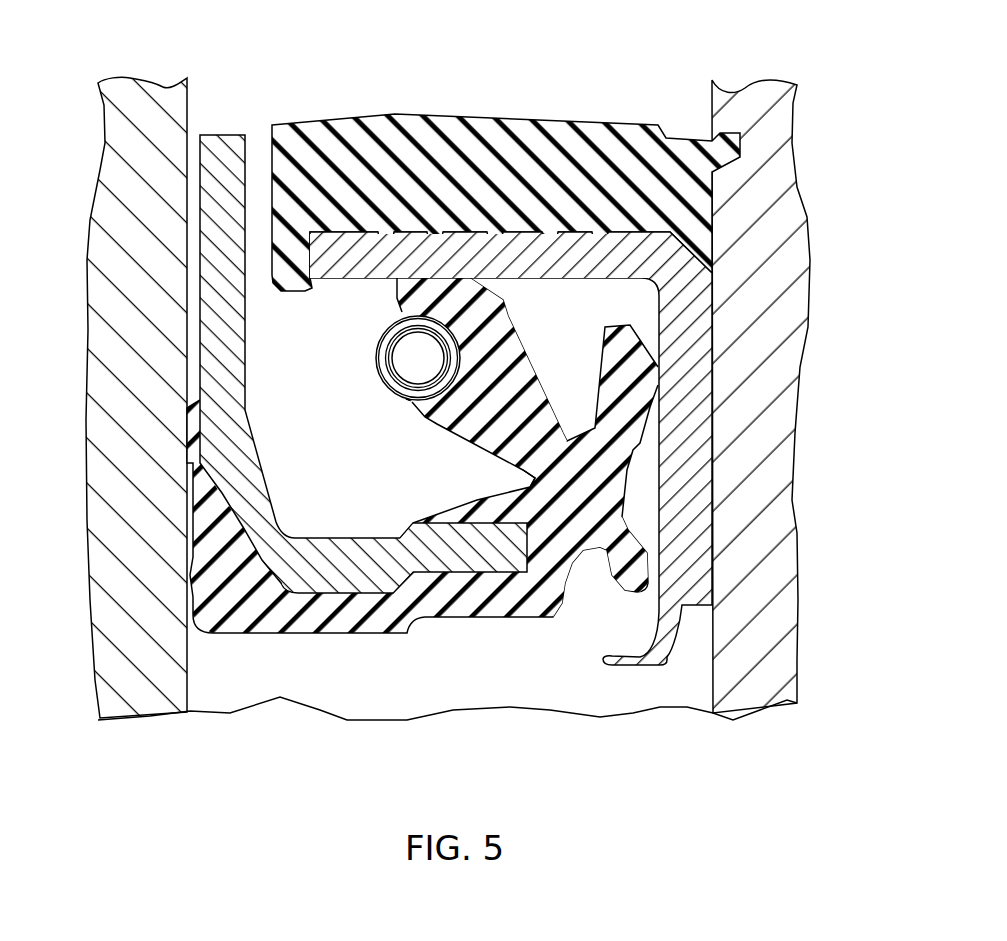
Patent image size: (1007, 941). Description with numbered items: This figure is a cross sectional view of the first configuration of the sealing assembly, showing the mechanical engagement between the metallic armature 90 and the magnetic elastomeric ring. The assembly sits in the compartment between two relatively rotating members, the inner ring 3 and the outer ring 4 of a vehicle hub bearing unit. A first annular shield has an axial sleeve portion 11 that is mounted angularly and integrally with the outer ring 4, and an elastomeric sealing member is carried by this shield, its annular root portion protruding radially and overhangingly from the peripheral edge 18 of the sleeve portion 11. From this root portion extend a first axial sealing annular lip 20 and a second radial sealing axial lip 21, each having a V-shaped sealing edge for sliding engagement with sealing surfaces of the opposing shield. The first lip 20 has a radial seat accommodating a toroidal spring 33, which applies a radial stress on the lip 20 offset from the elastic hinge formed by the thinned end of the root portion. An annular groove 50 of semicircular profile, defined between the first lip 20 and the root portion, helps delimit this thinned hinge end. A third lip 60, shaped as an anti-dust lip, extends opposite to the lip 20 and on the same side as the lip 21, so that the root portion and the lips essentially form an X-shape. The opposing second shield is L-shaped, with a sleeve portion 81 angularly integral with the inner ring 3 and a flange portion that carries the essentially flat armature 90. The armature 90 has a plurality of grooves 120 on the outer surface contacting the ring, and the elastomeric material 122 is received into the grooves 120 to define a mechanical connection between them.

The inner ring 3 is at (773, 445).
The outer ring 4 is at (115, 658).
The axial sleeve portion 11 is at (232, 390).
The peripheral edge 18 is at (485, 553).
The first axial sealing annular lip 20 is at (483, 352).
The second radial sealing axial lip 21 is at (580, 457).
The toroidal spring 33 is at (387, 390).
The annular groove 50 is at (533, 478).
The third lip 60 is at (643, 585).
The sleeve portion 81 is at (677, 333).
The armature 90 is at (357, 270).
The grooves 120 is at (440, 238).
The elastomeric material 122 is at (440, 238).